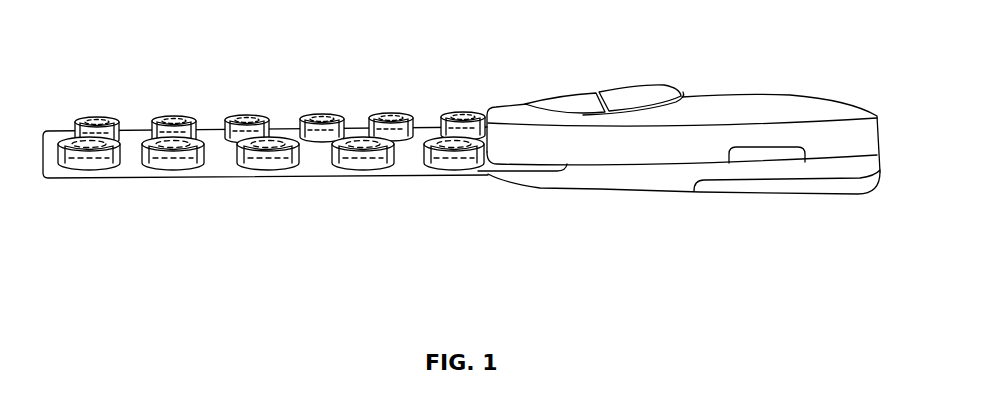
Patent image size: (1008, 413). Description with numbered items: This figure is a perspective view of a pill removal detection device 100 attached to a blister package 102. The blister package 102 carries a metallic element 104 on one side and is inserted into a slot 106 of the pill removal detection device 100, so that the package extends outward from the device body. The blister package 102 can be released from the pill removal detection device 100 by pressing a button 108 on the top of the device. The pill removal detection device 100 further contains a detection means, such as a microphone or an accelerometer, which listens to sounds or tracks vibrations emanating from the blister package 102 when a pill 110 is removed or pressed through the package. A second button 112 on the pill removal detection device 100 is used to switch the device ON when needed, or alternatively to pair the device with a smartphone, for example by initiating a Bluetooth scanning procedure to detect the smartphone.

The pill removal detection device 100 is at (773, 80).
The blister package 102 is at (128, 103).
The metallic element 104 is at (162, 223).
The slot 106 is at (548, 213).
The button 108 is at (682, 80).
The pill 110 is at (337, 103).
The button 112 is at (753, 207).